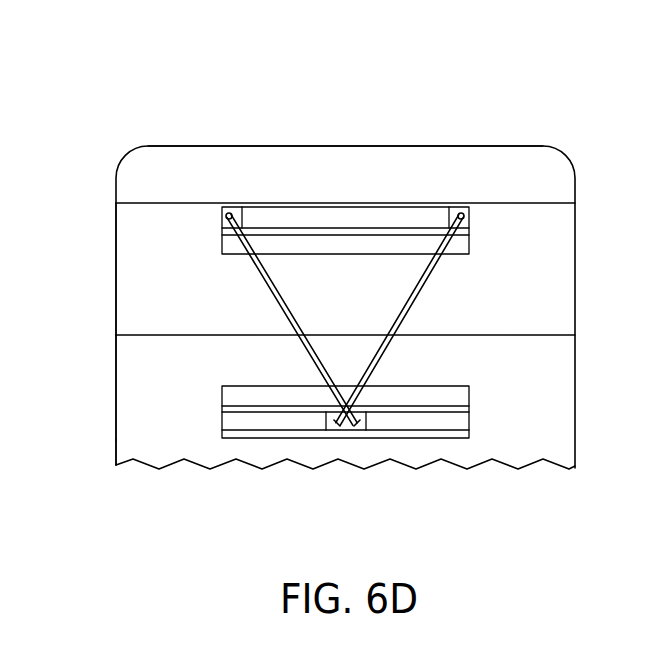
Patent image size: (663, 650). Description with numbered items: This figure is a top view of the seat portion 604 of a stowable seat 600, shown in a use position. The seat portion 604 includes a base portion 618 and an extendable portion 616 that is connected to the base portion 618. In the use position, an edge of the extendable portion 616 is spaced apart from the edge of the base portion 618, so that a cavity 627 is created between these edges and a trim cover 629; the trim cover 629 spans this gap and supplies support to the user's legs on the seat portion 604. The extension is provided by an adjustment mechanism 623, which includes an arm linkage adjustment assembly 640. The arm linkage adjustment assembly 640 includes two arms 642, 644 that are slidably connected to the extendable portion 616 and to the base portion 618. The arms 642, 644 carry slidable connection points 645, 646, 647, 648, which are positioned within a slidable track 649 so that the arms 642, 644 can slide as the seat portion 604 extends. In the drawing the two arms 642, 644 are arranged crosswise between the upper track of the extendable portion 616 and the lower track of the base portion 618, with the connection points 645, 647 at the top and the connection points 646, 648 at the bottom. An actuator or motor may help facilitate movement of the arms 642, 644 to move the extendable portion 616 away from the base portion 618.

The stowable seat 600 is at (490, 122).
The seat portion 604 is at (107, 368).
The extendable portion 616 is at (568, 183).
The base portion 618 is at (568, 382).
The adjustment mechanism 623 is at (248, 127).
The cavity 627 is at (137, 320).
The trim cover 629 is at (548, 287).
The arm linkage adjustment assembly 640 is at (177, 428).
The arm 642 is at (280, 299).
The arm 644 is at (410, 299).
The slidable connection point 645 is at (230, 214).
The slidable connection point 646 is at (340, 426).
The slidable connection point 647 is at (463, 218).
The slidable connection point 648 is at (354, 426).
The slidable track 649 is at (231, 423).